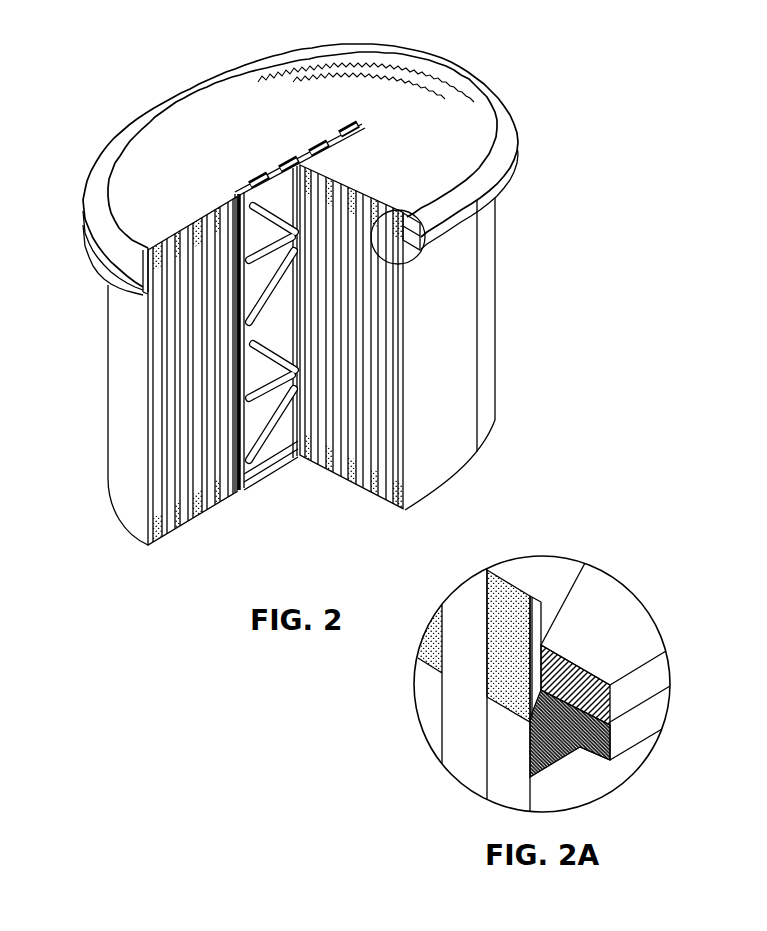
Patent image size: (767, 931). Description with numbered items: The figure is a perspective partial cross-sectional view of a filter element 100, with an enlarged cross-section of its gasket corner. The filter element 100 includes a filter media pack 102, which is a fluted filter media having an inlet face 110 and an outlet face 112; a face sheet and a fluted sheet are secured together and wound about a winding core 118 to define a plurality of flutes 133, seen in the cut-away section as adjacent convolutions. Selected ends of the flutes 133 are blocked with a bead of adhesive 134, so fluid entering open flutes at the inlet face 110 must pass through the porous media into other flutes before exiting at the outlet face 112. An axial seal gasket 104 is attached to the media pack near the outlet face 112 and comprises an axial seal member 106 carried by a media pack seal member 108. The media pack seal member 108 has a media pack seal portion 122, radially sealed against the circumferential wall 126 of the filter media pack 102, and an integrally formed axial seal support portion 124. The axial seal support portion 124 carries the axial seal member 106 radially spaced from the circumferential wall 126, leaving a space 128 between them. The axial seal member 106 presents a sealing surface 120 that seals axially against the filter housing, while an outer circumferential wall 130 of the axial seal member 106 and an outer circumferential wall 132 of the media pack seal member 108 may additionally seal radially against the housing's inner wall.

In FIG. 2, the filter element 100 is at (102, 126).
In FIG. 2, the filter media pack 102 is at (497, 328).
In FIG. 2, the axial seal gasket 104 is at (503, 113).
In FIG. 2A, the axial seal gasket 104 is at (653, 658).
In FIG. 2, the axial seal member 106 is at (448, 230).
In FIG. 2A, the axial seal member 106 is at (640, 632).
In FIG. 2, the media pack seal member 108 is at (413, 255).
In FIG. 2A, the media pack seal member 108 is at (612, 760).
In FIG. 2, the inlet face 110 is at (176, 530).
In FIG. 2, the outlet face 112 is at (227, 107).
In FIG. 2, the winding core 118 is at (267, 467).
In FIG. 2A, the sealing surface 120 is at (617, 615).
In FIG. 2A, the media pack seal portion 122 is at (553, 767).
In FIG. 2A, the axial seal support portion 124 is at (612, 727).
In FIG. 2, the circumferential wall 126 is at (425, 375).
In FIG. 2A, the circumferential wall 126 is at (548, 600).
In FIG. 2A, the space 128 is at (535, 657).
In FIG. 2A, the outer circumferential wall 130 is at (655, 677).
In FIG. 2A, the outer circumferential wall 132 is at (655, 702).
In FIG. 2, the flutes 133 is at (397, 510).
In FIG. 2A, the flutes 133 is at (463, 760).
In FIG. 2, the bead of adhesive 134 is at (390, 492).
In FIG. 2A, the bead of adhesive 134 is at (513, 610).